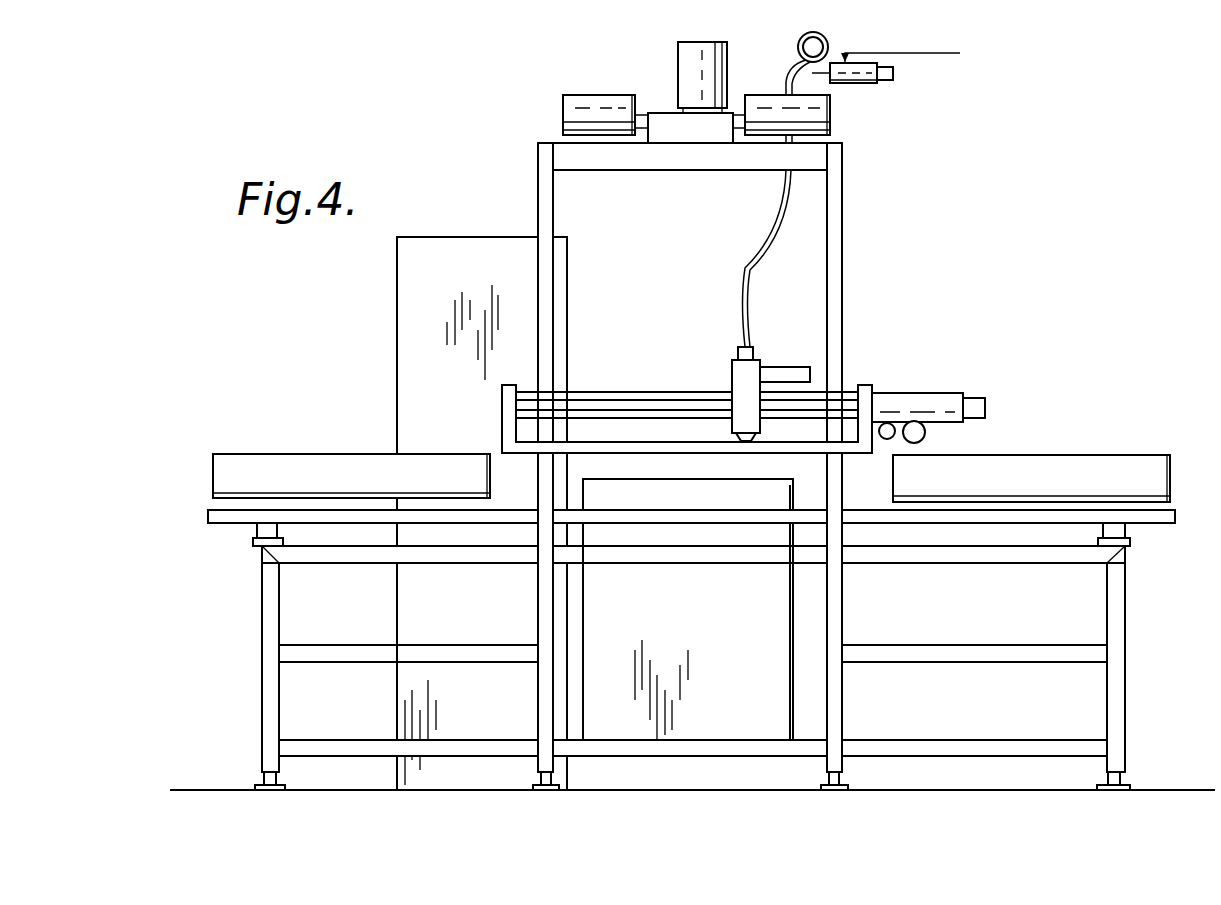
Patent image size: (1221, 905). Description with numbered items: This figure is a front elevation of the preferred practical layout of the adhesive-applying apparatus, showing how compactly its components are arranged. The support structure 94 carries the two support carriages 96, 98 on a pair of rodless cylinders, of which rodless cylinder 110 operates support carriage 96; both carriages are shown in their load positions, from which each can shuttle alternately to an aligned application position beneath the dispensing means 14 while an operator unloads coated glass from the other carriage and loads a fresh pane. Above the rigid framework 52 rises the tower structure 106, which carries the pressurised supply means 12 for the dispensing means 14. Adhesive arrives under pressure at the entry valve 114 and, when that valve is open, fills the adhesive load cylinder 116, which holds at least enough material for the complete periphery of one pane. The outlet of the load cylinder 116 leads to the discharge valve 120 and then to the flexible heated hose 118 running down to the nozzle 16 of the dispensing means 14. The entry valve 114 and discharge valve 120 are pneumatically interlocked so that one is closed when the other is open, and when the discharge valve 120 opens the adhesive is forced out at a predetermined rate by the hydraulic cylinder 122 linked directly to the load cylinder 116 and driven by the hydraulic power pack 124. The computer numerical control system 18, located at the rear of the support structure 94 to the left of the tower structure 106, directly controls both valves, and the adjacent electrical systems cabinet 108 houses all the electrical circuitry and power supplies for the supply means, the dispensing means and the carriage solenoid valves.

The pressurised supply means 12 is at (737, 93).
The dispensing means 14 is at (775, 356).
The nozzle 16 is at (760, 436).
The computer numerical control system 18 is at (468, 257).
The rigid framework 52 is at (642, 439).
The support structure 94 is at (672, 560).
The support carriage 96 is at (332, 472).
The support carriage 98 is at (1075, 477).
The tower structure 106 is at (849, 239).
The electrical systems cabinet 108 is at (768, 639).
The rodless cylinder 110 is at (437, 515).
The entry valve 114 is at (862, 81).
The adhesive load cylinder 116 is at (832, 120).
The flexible heated hose 118 is at (752, 250).
The discharge valve 120 is at (830, 50).
The hydraulic cylinder 122 is at (563, 108).
The hydraulic power pack 124 is at (690, 88).